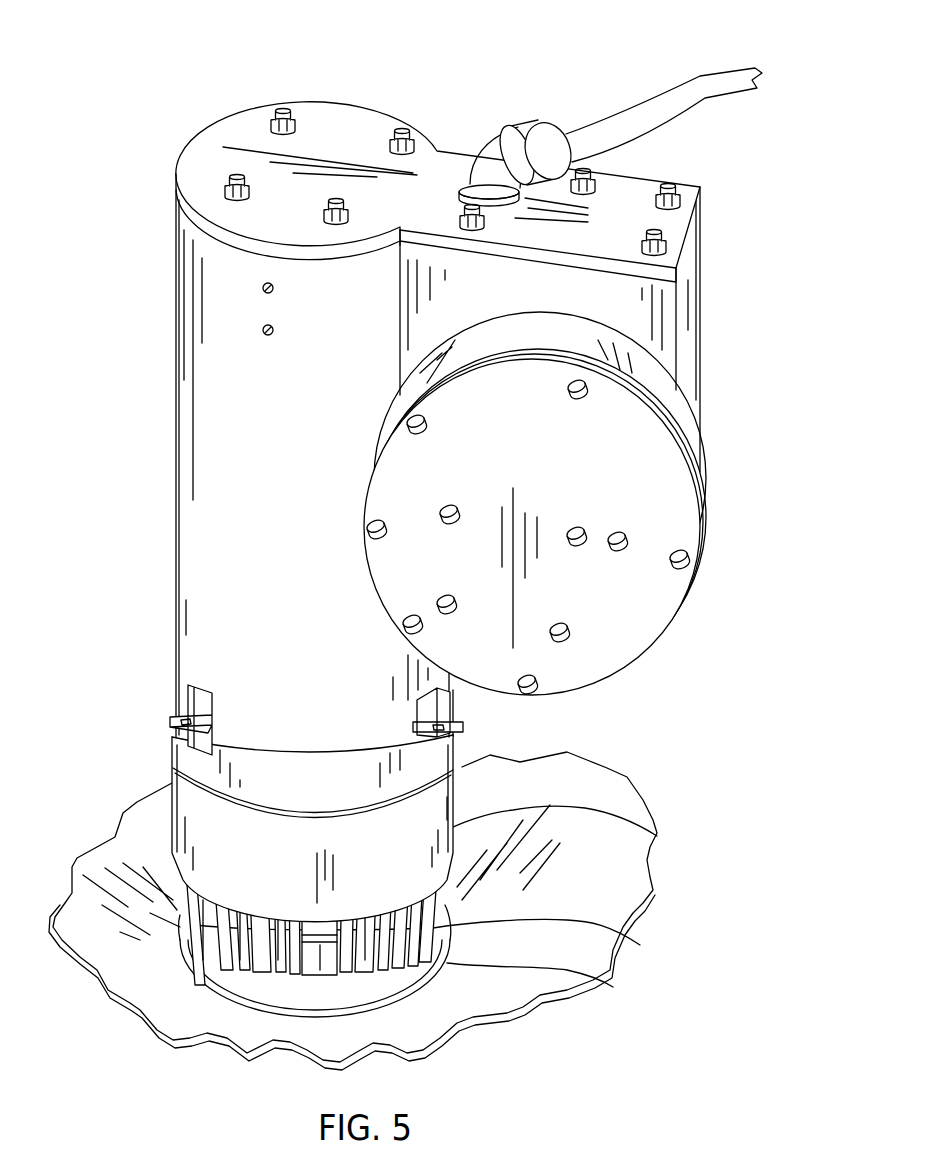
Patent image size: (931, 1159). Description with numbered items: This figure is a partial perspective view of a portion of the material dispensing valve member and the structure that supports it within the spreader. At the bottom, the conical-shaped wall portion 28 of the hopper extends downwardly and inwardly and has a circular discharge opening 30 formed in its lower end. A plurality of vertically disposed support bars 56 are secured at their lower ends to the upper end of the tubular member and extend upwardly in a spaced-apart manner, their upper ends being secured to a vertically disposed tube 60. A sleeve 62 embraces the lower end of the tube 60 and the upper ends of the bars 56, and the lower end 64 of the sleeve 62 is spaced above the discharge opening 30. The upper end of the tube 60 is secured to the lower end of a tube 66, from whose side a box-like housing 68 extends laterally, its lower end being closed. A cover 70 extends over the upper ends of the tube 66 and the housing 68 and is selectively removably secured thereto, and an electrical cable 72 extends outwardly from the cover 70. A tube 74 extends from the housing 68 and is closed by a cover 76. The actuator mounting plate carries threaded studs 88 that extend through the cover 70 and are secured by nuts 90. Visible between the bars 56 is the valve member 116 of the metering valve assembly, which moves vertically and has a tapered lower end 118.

The conical-shaped wall portion 28 is at (613, 903).
The circular discharge opening 30 is at (563, 968).
The support bars 56 is at (614, 928).
The tube 60 is at (355, 770).
The sleeve 62 is at (432, 836).
The lower end of sleeve 64 is at (572, 806).
The tube or housing 66 is at (163, 546).
The box-like housing 68 is at (655, 318).
The cover 70 is at (627, 195).
The electrical cable 72 is at (650, 108).
The tube 74 is at (643, 380).
The cover 76 is at (589, 476).
The threaded studs 88 is at (283, 107).
The nuts 90 is at (347, 203).
The valve member 116 is at (258, 958).
The tapered lower end 118 is at (316, 957).